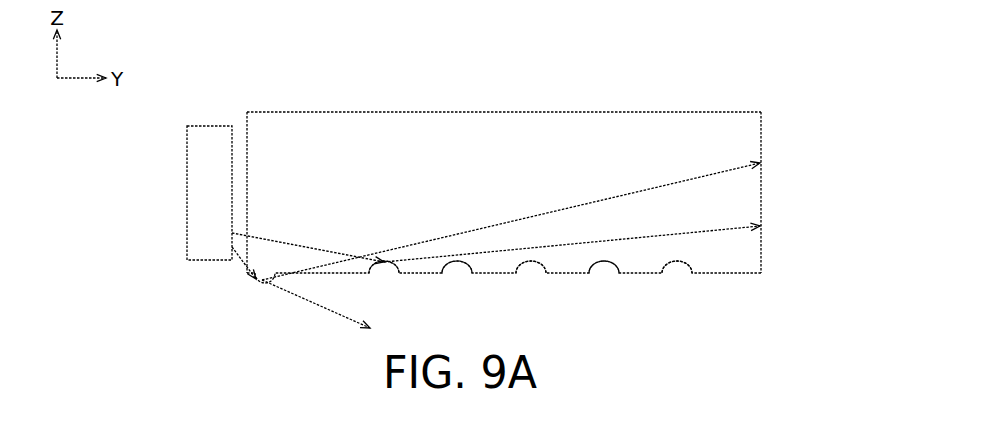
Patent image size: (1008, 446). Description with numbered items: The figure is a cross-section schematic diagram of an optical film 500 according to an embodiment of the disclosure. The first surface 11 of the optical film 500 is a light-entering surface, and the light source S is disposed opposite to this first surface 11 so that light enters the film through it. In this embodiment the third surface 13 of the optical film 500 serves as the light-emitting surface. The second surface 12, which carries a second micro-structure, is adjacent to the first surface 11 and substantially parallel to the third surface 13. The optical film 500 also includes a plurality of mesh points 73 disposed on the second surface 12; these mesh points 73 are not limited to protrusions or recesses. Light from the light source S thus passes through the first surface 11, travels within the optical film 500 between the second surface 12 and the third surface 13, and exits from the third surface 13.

The optical film 500 is at (835, 28).
The first surface 11 is at (247, 126).
The second surface 12 is at (723, 275).
The third surface 13 is at (668, 112).
The mesh points 73 is at (678, 277).
The light source S is at (203, 193).